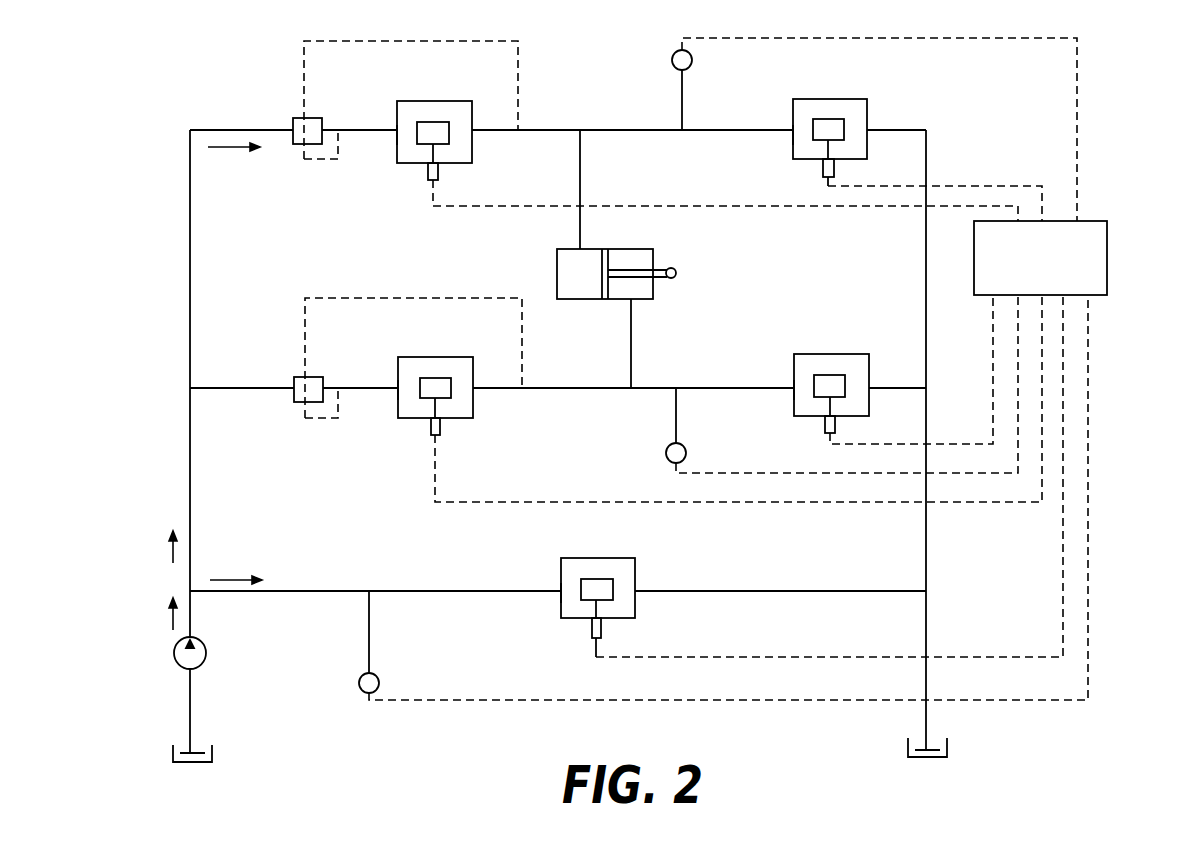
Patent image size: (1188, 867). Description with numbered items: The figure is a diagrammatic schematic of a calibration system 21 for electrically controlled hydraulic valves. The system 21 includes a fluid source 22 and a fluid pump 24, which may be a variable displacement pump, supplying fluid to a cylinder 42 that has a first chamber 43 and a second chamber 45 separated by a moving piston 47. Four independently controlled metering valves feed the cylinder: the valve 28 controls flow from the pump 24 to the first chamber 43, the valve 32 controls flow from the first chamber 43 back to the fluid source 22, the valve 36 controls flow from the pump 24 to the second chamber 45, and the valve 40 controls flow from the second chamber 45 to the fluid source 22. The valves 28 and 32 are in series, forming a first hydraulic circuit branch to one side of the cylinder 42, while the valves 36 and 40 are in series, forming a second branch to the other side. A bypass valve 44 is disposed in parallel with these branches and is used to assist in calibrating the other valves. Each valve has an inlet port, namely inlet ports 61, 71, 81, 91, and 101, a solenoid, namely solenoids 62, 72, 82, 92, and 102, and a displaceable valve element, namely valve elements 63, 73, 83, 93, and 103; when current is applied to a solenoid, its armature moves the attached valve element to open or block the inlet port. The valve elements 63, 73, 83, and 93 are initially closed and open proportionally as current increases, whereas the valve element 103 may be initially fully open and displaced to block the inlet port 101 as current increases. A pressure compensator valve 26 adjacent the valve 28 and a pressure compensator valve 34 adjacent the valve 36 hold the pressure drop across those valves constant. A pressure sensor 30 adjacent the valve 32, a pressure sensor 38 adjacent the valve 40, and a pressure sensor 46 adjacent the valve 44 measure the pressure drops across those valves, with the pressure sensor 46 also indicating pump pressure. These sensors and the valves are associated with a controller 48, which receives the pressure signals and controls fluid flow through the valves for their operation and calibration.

The calibration system 21 is at (146, 415).
The fluid source 22 is at (212, 752).
The fluid pump 24 is at (208, 656).
The pressure compensator valve 26 is at (293, 126).
The electrically controlled hydraulic valve 28 is at (661, 131).
The pressure sensor 30 is at (672, 60).
The electrically controlled hydraulic valve 32 is at (887, 135).
The pressure compensator valve 34 is at (294, 380).
The electrically controlled hydraulic valve 36 is at (673, 398).
The pressure sensor 38 is at (666, 453).
The electrically controlled hydraulic valve 40 is at (864, 369).
The cylinder 42 is at (642, 300).
The first chamber 43 is at (602, 259).
The bypass valve 44 is at (777, 476).
The second chamber 45 is at (630, 258).
The pressure sensor 46 is at (359, 683).
The piston 47 is at (604, 299).
The controller 48 is at (1107, 256).
The inlet port 61 is at (397, 138).
The solenoid 62 is at (438, 170).
The valve element 63 is at (433, 122).
The inlet port 71 is at (793, 138).
The solenoid 72 is at (834, 170).
The valve element 73 is at (828, 119).
The inlet port 81 is at (398, 398).
The solenoid 82 is at (440, 428).
The valve element 83 is at (435, 378).
The inlet port 91 is at (794, 398).
The solenoid 92 is at (835, 428).
The valve element 93 is at (832, 375).
The inlet port 101 is at (561, 598).
The solenoid 102 is at (601, 632).
The valve element 103 is at (598, 579).